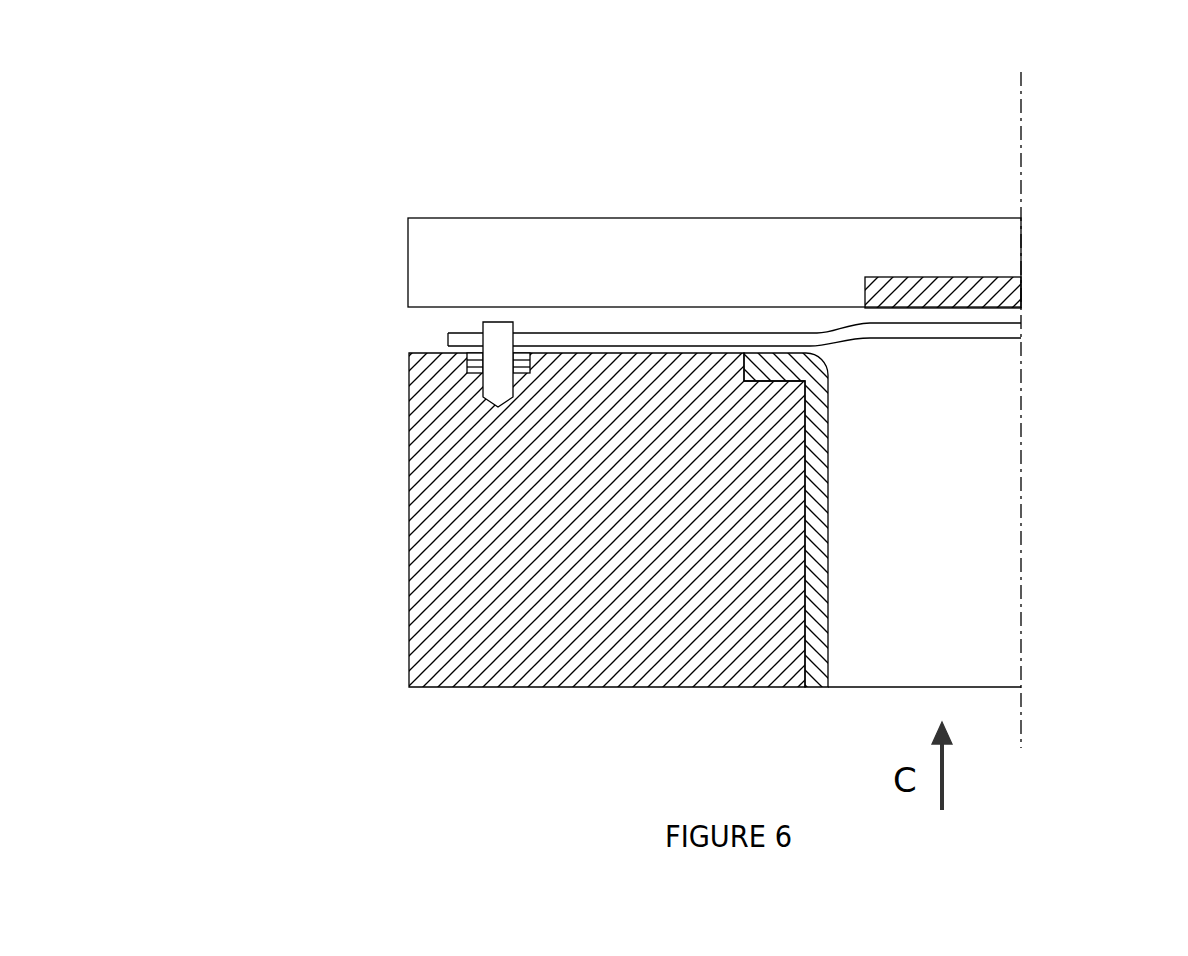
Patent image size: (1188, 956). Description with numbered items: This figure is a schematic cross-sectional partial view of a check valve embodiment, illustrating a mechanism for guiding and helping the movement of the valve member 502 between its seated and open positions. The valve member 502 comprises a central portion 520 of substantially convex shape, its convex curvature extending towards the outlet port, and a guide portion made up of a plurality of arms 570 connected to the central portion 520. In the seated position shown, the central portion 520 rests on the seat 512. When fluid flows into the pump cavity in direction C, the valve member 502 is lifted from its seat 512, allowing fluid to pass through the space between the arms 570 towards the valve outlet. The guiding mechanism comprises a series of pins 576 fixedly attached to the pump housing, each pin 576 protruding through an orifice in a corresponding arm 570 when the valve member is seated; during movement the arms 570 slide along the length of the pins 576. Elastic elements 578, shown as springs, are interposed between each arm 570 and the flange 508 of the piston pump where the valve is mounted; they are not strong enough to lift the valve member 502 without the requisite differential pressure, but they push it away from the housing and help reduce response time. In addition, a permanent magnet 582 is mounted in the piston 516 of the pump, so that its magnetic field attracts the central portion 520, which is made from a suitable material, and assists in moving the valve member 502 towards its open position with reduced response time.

The valve member 502 is at (740, 322).
The flange 508 is at (463, 528).
The seat 512 is at (828, 518).
The piston 516 is at (933, 243).
The central portion 520 is at (870, 335).
The arms 570 is at (532, 288).
The pins 576 is at (500, 385).
The elastic elements 578 is at (478, 357).
The permanent magnet 582 is at (1003, 293).